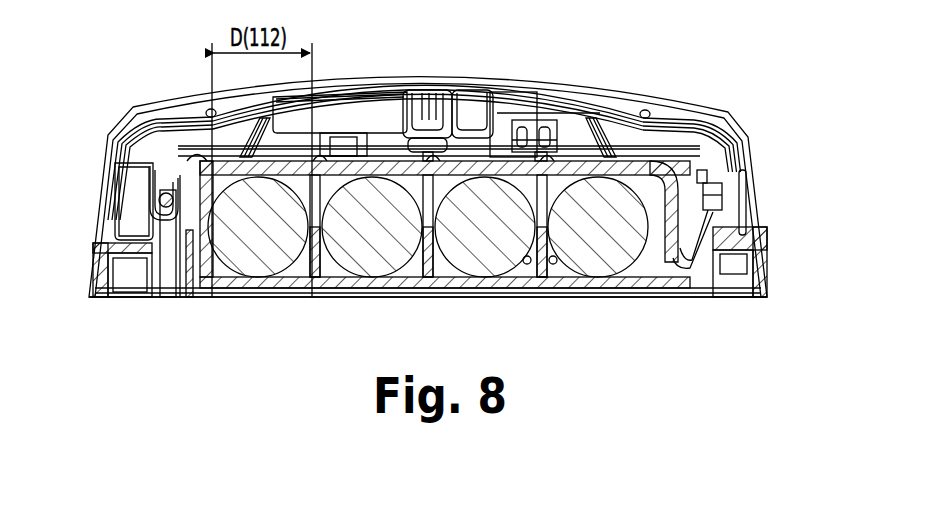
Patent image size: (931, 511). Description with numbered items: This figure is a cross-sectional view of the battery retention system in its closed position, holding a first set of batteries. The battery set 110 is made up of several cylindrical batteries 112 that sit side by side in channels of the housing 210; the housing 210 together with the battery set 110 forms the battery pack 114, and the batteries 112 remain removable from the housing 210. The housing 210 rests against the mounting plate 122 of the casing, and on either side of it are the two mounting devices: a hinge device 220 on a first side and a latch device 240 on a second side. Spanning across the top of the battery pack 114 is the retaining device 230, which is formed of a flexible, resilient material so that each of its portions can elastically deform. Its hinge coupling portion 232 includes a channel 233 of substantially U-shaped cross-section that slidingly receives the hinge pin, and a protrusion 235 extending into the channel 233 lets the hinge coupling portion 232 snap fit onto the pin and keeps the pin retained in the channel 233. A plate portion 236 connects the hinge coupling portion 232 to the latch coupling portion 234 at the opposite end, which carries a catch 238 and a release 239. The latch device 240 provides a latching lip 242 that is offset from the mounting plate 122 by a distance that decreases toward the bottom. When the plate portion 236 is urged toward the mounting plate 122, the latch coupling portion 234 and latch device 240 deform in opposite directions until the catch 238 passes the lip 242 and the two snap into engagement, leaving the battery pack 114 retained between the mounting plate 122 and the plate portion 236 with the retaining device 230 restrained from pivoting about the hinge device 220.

The battery set 110 is at (440, 290).
The battery 112 is at (380, 247).
The battery pack 114 is at (513, 312).
The mounting plate 122 is at (240, 300).
The housing 210 is at (317, 280).
The hinge device 220 is at (146, 273).
The retaining device 230 is at (363, 99).
The hinge coupling portion 232 is at (129, 198).
The channel 233 is at (170, 156).
The latch coupling portion 234 is at (683, 151).
The protrusion 235 is at (168, 182).
The plate portion 236 is at (473, 160).
The catch 238 is at (702, 250).
The release 239 is at (712, 178).
The latch device 240 is at (779, 189).
The latching lip 242 is at (713, 185).